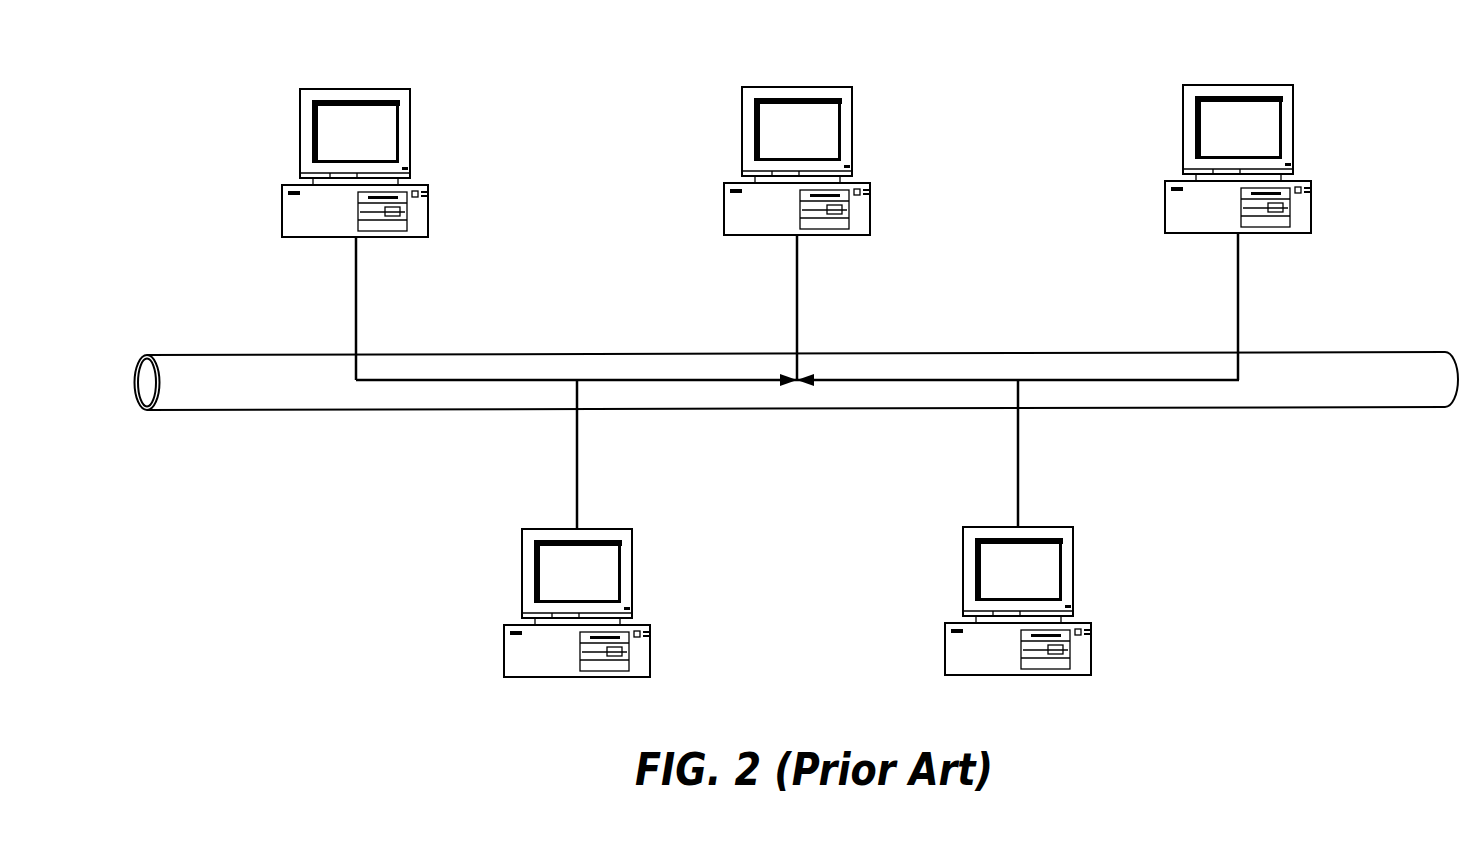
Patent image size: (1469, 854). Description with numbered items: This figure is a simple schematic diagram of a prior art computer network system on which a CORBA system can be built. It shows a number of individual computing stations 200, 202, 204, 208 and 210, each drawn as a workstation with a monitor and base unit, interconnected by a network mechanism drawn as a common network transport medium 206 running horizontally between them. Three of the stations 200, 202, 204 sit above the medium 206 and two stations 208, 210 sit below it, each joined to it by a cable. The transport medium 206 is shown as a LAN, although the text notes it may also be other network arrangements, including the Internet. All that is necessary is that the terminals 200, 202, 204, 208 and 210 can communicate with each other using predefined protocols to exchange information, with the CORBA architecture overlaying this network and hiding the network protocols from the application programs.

The station 200 is at (378, 219).
The station 202 is at (820, 218).
The station 204 is at (1260, 217).
The network bus 206 is at (797, 362).
The station 208 is at (600, 528).
The station 210 is at (1040, 527).